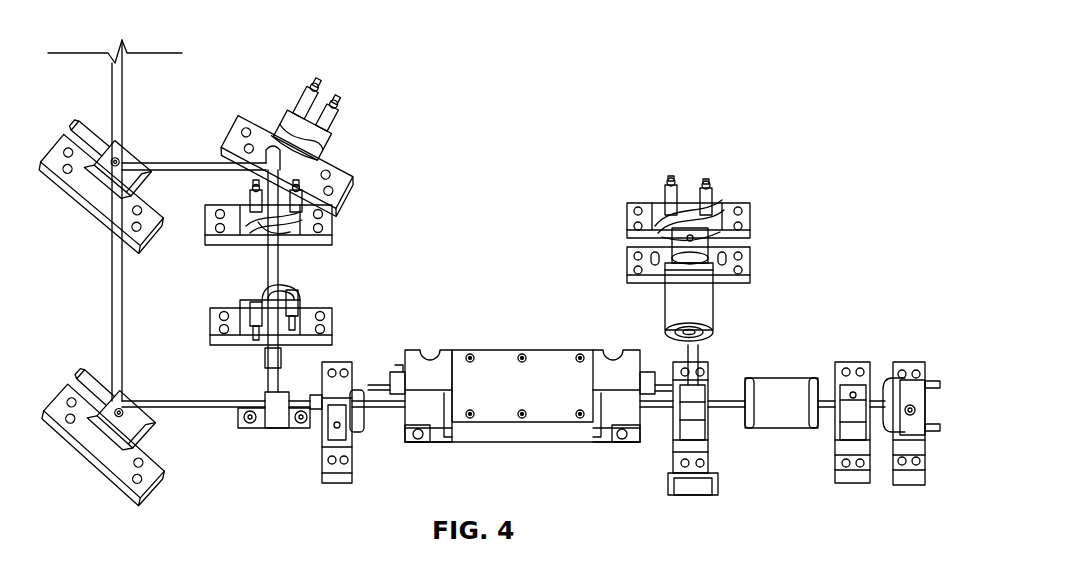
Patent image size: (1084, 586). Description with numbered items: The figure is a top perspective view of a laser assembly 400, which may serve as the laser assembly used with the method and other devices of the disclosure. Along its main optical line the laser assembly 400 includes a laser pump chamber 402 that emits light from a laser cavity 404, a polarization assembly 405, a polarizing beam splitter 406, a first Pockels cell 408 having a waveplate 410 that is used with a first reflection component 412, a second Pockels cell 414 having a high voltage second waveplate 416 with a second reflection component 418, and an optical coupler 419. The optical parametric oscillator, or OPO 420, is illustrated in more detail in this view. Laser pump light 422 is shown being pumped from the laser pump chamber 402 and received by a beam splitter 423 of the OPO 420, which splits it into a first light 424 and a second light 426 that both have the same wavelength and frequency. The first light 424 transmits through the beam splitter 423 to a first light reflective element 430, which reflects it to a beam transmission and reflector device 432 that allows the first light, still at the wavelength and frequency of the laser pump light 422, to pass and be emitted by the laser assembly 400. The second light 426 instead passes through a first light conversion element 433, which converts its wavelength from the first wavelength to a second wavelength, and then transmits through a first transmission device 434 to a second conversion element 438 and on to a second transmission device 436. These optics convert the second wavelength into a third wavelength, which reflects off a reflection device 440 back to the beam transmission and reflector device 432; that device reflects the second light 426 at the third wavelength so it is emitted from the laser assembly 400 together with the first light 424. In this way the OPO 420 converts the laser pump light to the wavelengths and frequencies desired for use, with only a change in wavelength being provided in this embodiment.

The laser assembly 400 is at (686, 53).
The laser pump chamber 402 is at (497, 350).
The laser cavity 404 is at (600, 414).
The polarization assembly 405 is at (845, 201).
The polarizing beam splitter 406 is at (700, 392).
The first Pockels cell 408 is at (782, 398).
The waveplate 410 is at (856, 392).
The first reflection component 412 is at (890, 388).
The second Pockels cell 414 is at (706, 305).
The high voltage second waveplate 416 is at (702, 223).
The second reflection component 418 is at (692, 217).
The optical coupler 419 is at (362, 393).
The Optical Parametric Oscillator (OPO) 420 is at (365, 178).
The laser pump light 422 is at (397, 404).
The beam splitter 423 is at (277, 420).
The first light 424 is at (187, 401).
The second light 426 is at (283, 380).
The first light reflective element 430 is at (138, 418).
The beam transmission and reflector device 432 is at (131, 188).
The first light conversion element 433 is at (267, 362).
The first transmission device 434 is at (279, 292).
The second transmission device 436 is at (290, 237).
The second conversion element 438 is at (275, 258).
The reflection device 440 is at (287, 148).